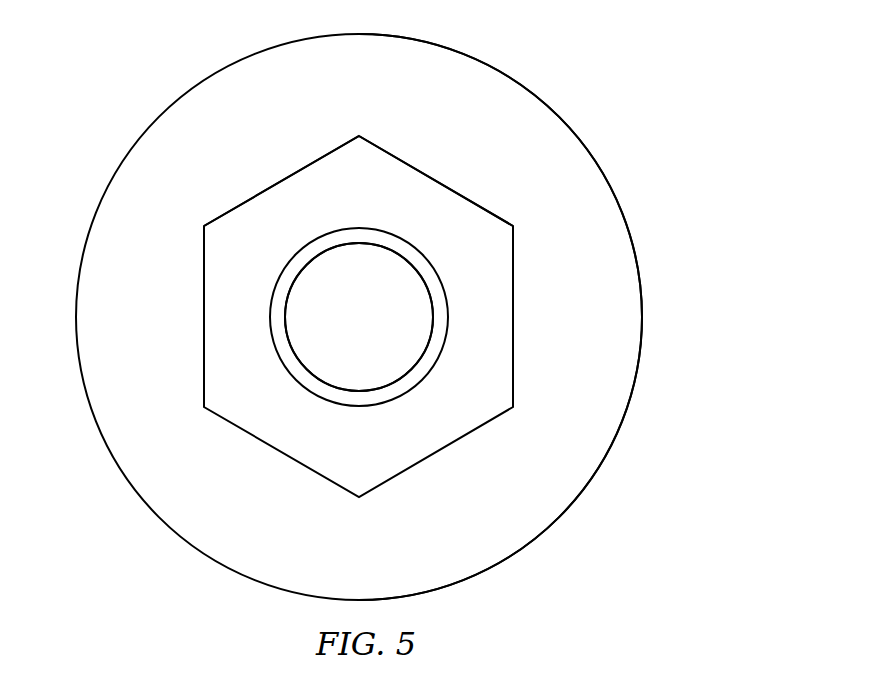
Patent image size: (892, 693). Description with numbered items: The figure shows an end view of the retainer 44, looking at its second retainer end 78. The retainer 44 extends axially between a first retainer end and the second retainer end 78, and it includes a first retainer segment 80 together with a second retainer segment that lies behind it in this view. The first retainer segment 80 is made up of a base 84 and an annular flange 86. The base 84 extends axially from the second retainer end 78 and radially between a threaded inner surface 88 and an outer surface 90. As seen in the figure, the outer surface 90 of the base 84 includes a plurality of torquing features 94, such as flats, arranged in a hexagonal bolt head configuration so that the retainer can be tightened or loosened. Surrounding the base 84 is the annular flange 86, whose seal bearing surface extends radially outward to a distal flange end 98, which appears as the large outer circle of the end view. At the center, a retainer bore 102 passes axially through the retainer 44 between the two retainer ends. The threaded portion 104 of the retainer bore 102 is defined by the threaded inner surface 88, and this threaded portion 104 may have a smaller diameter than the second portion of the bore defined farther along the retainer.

The retainer 44 is at (641, 94).
The second retainer end 78 is at (492, 303).
The first retainer segment 80 is at (108, 144).
The base 84 is at (524, 359).
The annular flange 86 is at (652, 282).
The threaded inner surface 88 is at (288, 303).
The outer surface 90 is at (204, 318).
The torquing features 94 is at (282, 180).
The distal flange end 98 is at (638, 366).
The retainer bore 102 is at (359, 243).
The threaded portion 104 is at (363, 252).